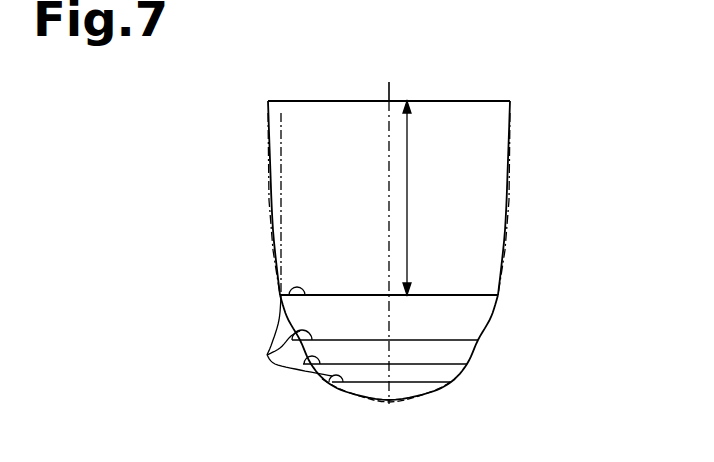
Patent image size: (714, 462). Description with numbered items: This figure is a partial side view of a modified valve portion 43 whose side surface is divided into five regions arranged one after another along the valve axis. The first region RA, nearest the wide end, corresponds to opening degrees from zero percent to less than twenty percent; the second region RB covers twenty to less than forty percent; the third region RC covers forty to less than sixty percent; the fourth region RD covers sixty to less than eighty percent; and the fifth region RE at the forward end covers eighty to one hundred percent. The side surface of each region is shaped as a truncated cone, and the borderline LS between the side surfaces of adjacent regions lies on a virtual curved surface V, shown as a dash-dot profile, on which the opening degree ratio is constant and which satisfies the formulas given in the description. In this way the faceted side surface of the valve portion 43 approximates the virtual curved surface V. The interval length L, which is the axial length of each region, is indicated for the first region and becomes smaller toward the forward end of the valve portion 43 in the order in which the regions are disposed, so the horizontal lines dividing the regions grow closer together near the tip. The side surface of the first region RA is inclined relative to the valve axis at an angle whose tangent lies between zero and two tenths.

The valve portion 43 is at (292, 251).
The interval length L is at (415, 198).
The virtual curved surface V is at (507, 189).
The first region RA is at (496, 225).
The second region RB is at (481, 317).
The third region RC is at (468, 352).
The fourth region RD is at (451, 376).
The fifth region RE is at (413, 387).
The borderline LS is at (281, 336).